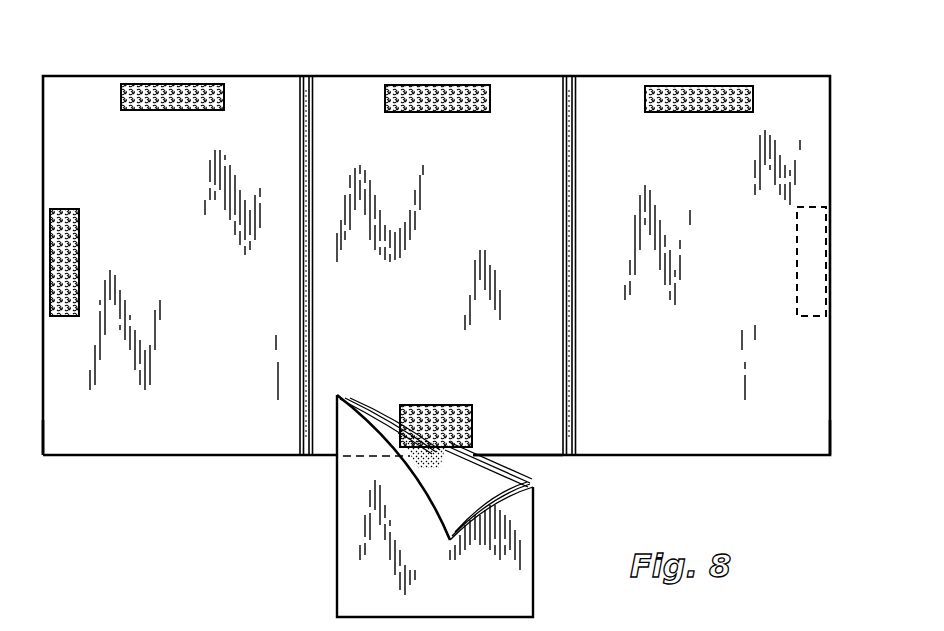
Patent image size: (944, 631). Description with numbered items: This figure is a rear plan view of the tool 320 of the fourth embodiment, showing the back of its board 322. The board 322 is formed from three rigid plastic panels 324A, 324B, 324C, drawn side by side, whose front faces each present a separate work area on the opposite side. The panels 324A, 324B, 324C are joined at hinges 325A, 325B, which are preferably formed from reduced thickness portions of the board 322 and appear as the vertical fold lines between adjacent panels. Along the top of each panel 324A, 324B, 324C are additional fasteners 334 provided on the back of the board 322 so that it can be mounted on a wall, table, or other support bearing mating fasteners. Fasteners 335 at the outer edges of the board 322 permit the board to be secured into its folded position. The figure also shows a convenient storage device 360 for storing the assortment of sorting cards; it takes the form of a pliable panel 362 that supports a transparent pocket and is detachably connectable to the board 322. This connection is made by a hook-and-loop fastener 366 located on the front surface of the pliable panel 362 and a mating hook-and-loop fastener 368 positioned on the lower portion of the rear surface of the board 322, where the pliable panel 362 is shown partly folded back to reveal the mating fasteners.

The tool 320 is at (642, 74).
The board 322 is at (140, 36).
The first panel 324A is at (41, 422).
The second panel 324B is at (549, 457).
The third panel 324C is at (835, 423).
The hinge 325A is at (300, 315).
The hinge 325B is at (568, 359).
The additional fasteners 334 is at (210, 84).
The fasteners 335 is at (80, 232).
The storage device 360 is at (328, 576).
The pliable panel 362 is at (345, 512).
The hook-and-loop fastener 366 is at (399, 423).
The mating hook-and-loop fastener 368 is at (463, 406).